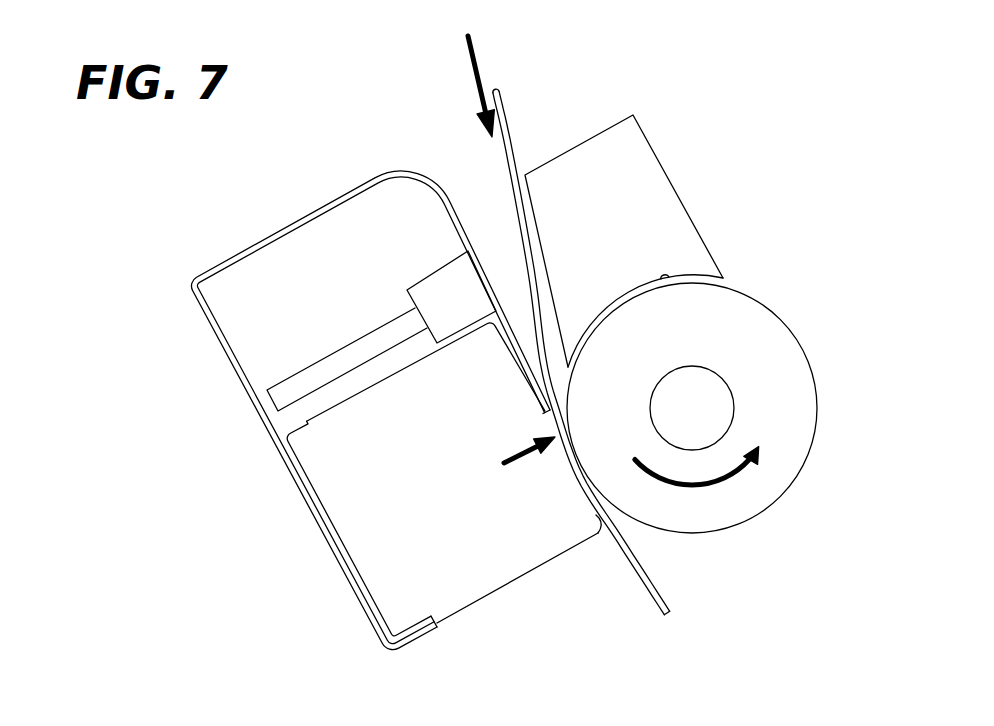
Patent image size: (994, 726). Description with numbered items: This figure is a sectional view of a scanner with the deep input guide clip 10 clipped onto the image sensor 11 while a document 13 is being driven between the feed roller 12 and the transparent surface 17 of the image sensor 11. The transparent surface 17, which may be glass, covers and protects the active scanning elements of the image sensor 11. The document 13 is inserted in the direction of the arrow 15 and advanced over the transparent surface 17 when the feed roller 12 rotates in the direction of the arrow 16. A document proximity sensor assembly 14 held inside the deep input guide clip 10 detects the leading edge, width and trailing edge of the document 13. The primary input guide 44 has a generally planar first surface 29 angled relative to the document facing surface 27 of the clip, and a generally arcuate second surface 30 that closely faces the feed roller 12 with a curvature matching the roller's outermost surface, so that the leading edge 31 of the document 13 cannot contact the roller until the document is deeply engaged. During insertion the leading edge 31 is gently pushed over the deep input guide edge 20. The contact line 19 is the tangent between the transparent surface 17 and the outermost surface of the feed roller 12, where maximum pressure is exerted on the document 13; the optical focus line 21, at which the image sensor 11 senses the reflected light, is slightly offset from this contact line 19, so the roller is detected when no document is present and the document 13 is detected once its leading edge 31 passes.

The deep input guide clip 10 is at (332, 203).
The image sensor 11 is at (372, 543).
The feed roller 12 is at (753, 338).
The document 13 is at (512, 143).
The document proximity sensor assembly 14 is at (264, 375).
The arrow 15 is at (471, 73).
The arrow 16 is at (700, 490).
The transparent surface 17 is at (599, 520).
The contact line 19 is at (573, 470).
The deep input guide edge 20 is at (549, 413).
The optical focus line 21 is at (510, 466).
The document facing surface 27 is at (528, 353).
The first surface 29 is at (548, 283).
The second surface 30 is at (668, 272).
The leading edge 31 is at (670, 617).
The primary input guide 44 is at (643, 152).